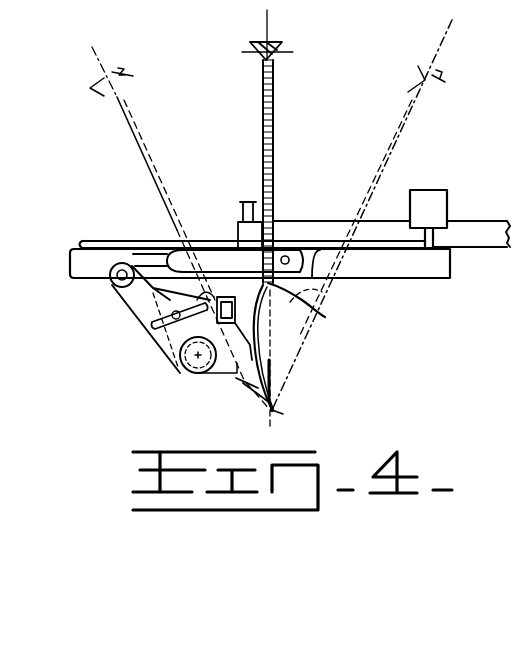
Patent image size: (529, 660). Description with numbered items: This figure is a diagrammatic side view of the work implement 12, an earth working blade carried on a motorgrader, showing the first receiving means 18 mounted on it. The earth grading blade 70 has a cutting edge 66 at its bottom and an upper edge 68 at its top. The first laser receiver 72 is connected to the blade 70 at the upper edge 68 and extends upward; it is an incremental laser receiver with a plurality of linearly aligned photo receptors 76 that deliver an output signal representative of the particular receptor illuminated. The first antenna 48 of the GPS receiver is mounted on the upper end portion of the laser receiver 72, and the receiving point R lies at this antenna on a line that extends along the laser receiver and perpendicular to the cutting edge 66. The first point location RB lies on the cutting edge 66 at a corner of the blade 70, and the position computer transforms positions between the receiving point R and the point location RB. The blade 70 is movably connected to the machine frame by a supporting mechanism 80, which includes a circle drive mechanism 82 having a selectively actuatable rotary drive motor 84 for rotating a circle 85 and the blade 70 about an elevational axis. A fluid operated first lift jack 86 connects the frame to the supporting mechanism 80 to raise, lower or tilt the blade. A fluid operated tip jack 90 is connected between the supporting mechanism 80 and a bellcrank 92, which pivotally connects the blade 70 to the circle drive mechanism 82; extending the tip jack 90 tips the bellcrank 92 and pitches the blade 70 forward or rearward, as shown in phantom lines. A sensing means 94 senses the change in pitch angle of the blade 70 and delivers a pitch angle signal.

The work implement 12 is at (323, 360).
The first receiving means 18 is at (278, 111).
The first antenna 48 is at (249, 42).
The cutting edge 66 is at (280, 405).
The upper edge 68 is at (323, 313).
The earth grading blade 70 is at (257, 386).
The first laser receiver 72 is at (273, 90).
The photo receptors 76 is at (273, 135).
The supporting mechanism 80 is at (485, 224).
The circle drive mechanism 82 is at (328, 241).
The rotary drive motor 84 is at (442, 199).
The circle 85 is at (423, 274).
The first lift jack 86 is at (236, 210).
The tip jack 90 is at (230, 265).
The bellcrank 92 is at (153, 335).
The sensing means 94 is at (188, 367).
The receiving point R is at (278, 43).
The first point location RB is at (277, 408).